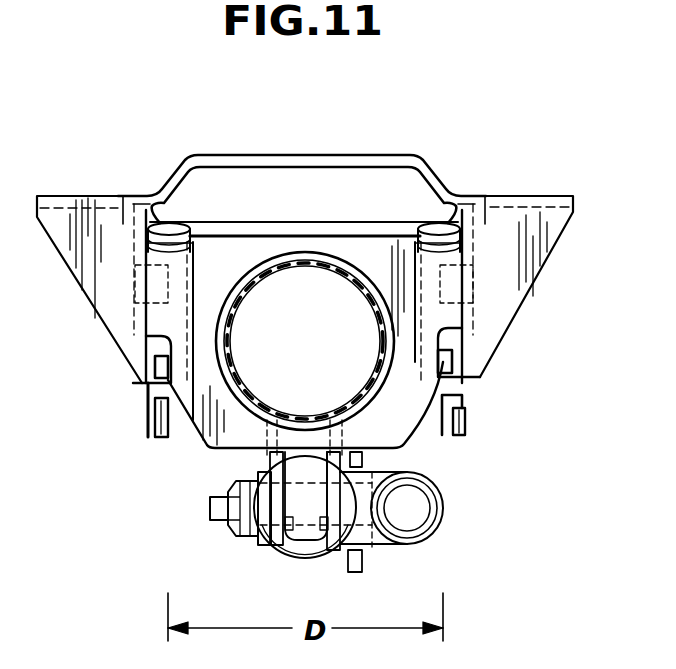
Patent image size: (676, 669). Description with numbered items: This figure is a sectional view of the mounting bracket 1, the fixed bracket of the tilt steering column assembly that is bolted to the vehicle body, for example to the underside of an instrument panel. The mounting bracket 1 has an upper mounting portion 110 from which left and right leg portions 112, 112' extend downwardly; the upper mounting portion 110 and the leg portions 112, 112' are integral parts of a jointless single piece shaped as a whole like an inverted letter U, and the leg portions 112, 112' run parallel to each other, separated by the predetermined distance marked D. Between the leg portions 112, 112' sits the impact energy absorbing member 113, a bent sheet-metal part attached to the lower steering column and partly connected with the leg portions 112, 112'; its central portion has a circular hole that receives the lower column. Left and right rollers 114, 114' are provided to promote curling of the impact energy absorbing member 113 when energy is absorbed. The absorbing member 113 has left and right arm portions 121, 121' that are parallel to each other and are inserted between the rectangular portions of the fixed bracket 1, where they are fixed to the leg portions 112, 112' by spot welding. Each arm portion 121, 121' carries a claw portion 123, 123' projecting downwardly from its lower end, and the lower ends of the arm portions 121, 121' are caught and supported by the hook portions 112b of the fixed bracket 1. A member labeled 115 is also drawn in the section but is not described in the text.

The mounting bracket 1 is at (390, 154).
The upper mounting portion 110 is at (238, 154).
The leg portion 112 is at (85, 289).
The leg portion 112' is at (555, 286).
The hook portion 112b is at (160, 378).
The impact energy absorbing member 113 is at (398, 432).
The roller 114 is at (145, 193).
The roller 114' is at (466, 192).
The cross bar 115 is at (333, 221).
The arm portion 121 is at (113, 384).
The arm portion 121' is at (515, 352).
The claw portion 123 is at (121, 437).
The claw portion 123' is at (503, 416).